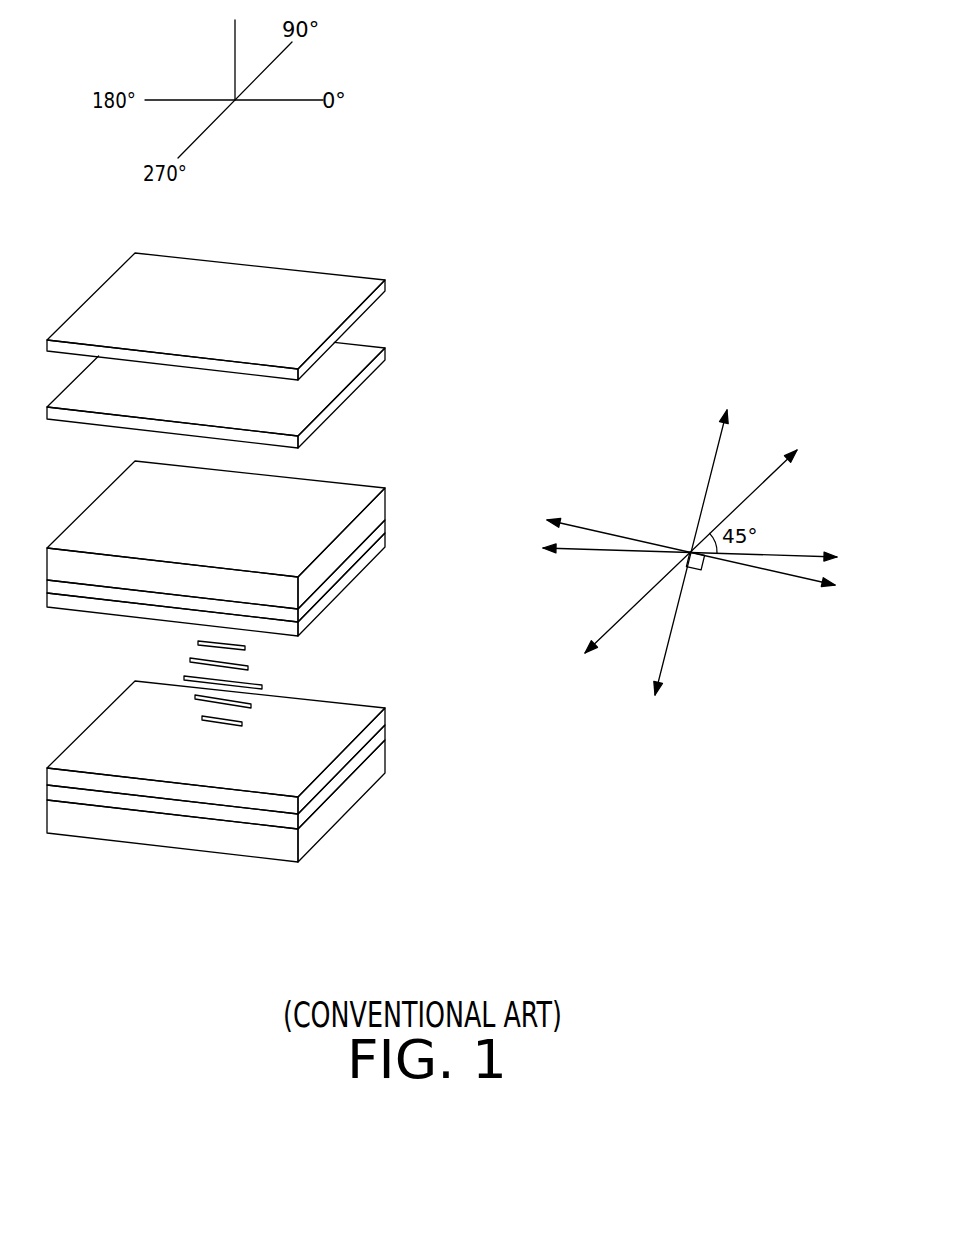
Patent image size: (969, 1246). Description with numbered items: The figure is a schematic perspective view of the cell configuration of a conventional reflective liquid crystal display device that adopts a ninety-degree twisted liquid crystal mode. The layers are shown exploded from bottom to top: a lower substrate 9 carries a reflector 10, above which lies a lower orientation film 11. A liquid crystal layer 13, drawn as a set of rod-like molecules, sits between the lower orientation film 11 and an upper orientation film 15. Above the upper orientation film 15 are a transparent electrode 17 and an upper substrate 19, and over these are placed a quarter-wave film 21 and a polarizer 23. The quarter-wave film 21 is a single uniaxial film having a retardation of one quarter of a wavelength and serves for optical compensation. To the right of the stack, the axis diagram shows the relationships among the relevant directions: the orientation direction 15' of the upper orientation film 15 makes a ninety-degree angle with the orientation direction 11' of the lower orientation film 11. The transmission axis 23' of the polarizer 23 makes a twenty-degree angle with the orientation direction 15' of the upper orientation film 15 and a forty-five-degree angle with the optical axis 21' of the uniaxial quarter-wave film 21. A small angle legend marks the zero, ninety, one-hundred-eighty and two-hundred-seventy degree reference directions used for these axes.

The lower substrate 9 is at (327, 823).
The reflector 10 is at (362, 763).
The lower orientation film 11 is at (257, 742).
The liquid crystal layer 13 is at (272, 647).
The upper orientation film 15 is at (216, 594).
The transparent electrode 17 is at (368, 547).
The upper substrate 19 is at (378, 510).
The λ/4 film 21 is at (258, 395).
The polarizer 23 is at (258, 316).
The orientation direction of lower orientation film 11' is at (661, 552).
The orientation direction of upper orientation film 15' is at (691, 581).
The optical axis of λ/4 film 21' is at (709, 551).
The transmission axis of polarizer 23' is at (703, 544).